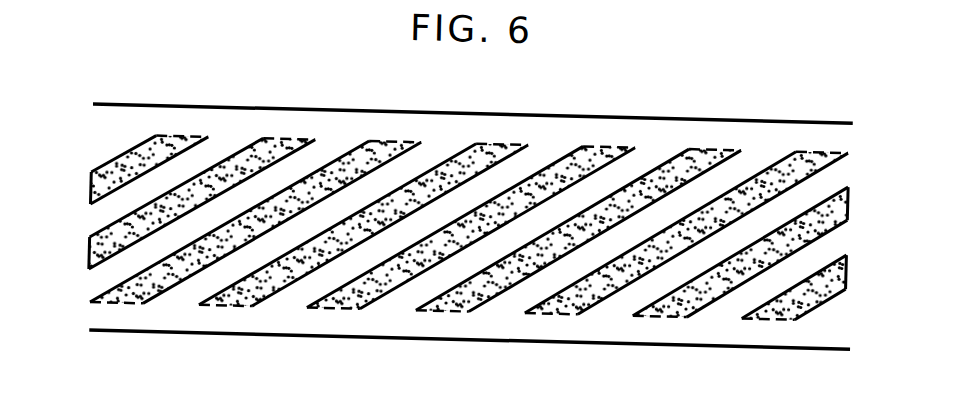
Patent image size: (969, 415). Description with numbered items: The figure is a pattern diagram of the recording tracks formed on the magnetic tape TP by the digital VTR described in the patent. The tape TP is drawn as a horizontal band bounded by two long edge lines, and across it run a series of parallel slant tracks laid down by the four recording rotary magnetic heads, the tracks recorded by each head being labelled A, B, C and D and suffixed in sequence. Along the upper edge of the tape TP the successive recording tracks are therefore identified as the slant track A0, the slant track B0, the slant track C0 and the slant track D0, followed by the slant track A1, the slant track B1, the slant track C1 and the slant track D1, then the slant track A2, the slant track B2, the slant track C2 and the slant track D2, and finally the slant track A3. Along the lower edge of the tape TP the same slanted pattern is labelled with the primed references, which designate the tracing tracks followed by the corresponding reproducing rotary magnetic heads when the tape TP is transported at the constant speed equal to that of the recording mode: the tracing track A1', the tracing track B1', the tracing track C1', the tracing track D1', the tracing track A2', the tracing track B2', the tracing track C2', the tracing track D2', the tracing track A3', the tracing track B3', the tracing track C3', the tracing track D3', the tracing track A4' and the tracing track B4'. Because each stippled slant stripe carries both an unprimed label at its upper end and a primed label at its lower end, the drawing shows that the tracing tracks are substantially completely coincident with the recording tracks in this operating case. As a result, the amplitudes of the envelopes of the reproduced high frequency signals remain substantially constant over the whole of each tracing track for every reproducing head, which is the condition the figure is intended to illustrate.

The magnetic tape TP is at (120, 112).
The slant track A0 is at (178, 136).
The slant track B0 is at (224, 144).
The slant track C0 is at (283, 137).
The slant track D0 is at (329, 144).
The slant track A1 is at (255, 226).
The slant track B1 is at (451, 110).
The slant track C1 is at (363, 229).
The slant track D1 is at (557, 111).
The slant track A2 is at (471, 232).
The slant track B2 is at (662, 114).
The slant track C2 is at (578, 234).
The slant track D2 is at (773, 118).
The slant track A3 is at (686, 237).
The tracing track A1' is at (115, 341).
The tracing track B1' is at (179, 343).
The tracing track C1' is at (224, 343).
The tracing track D1' is at (284, 345).
The tracing track A2' is at (332, 346).
The tracing track B2' is at (395, 348).
The tracing track C2' is at (441, 349).
The tracing track D2' is at (503, 351).
The tracing track A3' is at (550, 352).
The tracing track B3' is at (612, 353).
The tracing track C3' is at (739, 293).
The tracing track D3' is at (720, 356).
The tracing track A4' is at (793, 329).
The tracing track B4' is at (818, 358).